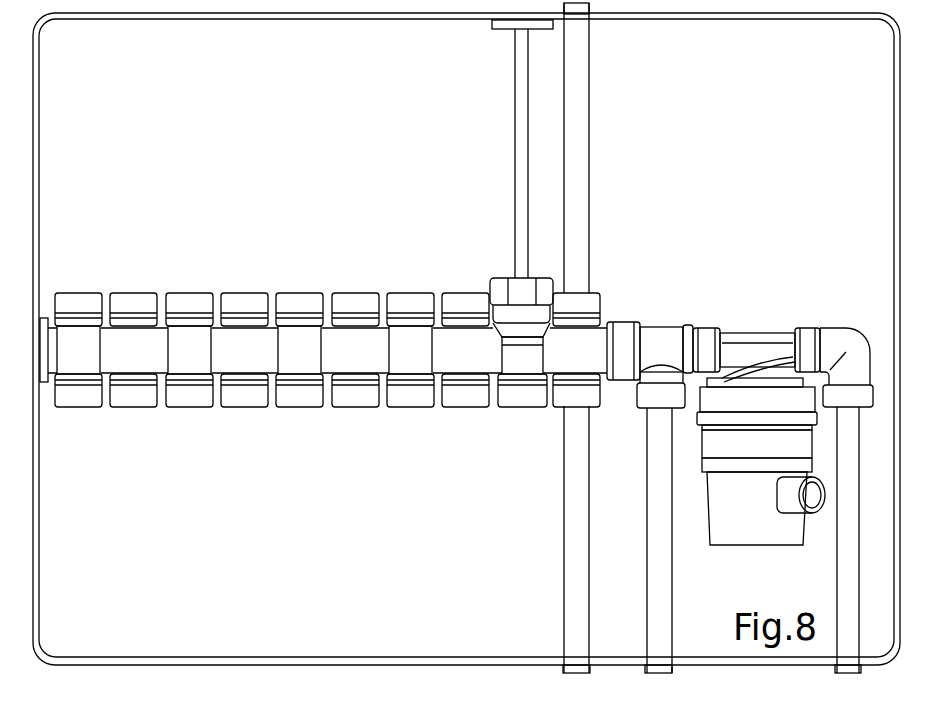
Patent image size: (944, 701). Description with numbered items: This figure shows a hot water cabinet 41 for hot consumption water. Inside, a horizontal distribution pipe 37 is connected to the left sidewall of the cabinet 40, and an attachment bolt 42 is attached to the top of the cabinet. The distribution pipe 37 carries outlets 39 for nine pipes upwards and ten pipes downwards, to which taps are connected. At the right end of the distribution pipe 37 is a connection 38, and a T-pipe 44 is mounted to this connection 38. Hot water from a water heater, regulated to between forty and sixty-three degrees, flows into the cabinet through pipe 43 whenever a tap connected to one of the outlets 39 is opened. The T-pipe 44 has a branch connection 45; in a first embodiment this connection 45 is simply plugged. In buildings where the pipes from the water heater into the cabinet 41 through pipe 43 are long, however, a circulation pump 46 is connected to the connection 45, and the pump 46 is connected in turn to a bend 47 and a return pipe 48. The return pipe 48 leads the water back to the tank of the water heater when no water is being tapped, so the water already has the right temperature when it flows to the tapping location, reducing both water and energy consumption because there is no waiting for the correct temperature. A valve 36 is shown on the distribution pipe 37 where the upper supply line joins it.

The valve 36 is at (507, 313).
The distribution pipe 37 is at (580, 350).
The connection 38 is at (623, 365).
The outlets 39 is at (128, 294).
The left sidewall of the cabinet 40 is at (43, 318).
The hot water cabinet 41 is at (40, 560).
The attachment bolt 42 is at (494, 30).
The pipe 43 is at (658, 560).
The T-pipe 44 is at (653, 335).
The connection 45 is at (700, 335).
The circulation pump 46 is at (755, 337).
The bend 47 is at (842, 340).
The return pipe 48 is at (848, 563).